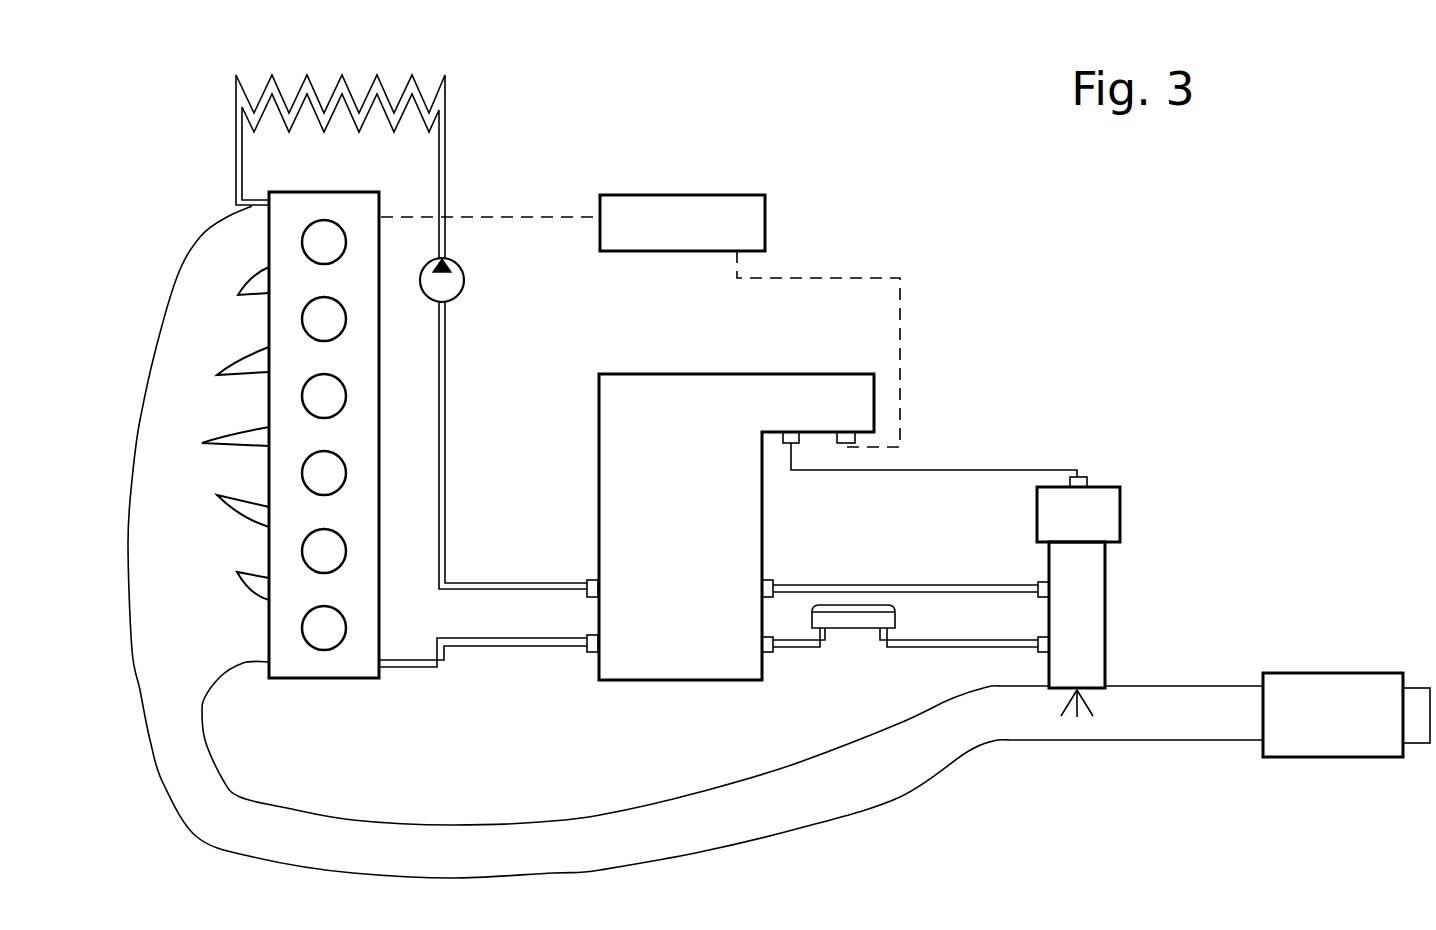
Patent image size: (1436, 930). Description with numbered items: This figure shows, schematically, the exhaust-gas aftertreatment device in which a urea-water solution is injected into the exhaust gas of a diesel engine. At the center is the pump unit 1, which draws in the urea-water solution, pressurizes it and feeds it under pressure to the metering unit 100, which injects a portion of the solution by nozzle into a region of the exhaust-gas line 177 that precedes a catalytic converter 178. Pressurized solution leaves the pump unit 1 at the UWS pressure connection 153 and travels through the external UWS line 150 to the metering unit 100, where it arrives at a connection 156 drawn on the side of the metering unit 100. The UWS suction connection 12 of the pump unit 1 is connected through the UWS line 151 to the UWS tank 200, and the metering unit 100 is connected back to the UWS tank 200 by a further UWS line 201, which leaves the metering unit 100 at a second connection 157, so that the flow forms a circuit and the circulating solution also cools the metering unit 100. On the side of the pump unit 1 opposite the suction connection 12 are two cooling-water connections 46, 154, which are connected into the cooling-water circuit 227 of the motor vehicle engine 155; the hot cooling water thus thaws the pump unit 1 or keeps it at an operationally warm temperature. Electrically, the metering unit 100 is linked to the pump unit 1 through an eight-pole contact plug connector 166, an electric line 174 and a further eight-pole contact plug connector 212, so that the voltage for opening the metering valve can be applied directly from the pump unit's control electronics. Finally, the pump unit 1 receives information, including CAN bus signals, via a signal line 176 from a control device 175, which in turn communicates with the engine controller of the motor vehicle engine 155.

The pump unit 1 is at (695, 529).
The UWS suction connection 12 is at (772, 653).
The cooling-water connection 46 is at (587, 650).
The metering unit 100 is at (1130, 598).
The external UWS line 150 is at (875, 585).
The UWS line 151 is at (805, 647).
The UWS pressure connection 153 is at (773, 582).
The cooling-water connection 154 is at (587, 582).
The motor vehicle engine 155 is at (320, 663).
The injector pressure connection 156 is at (1038, 585).
The injector return connection 157 is at (1038, 648).
The 8-pole contact plug connector 166 is at (1087, 481).
The electric line 174 is at (962, 470).
The control device 175 is at (660, 232).
The signal line 176 is at (846, 278).
The exhaust-gas line 177 is at (990, 720).
The catalytic converter 178 is at (1315, 726).
The UWS tank 200 is at (853, 630).
The further UWS line 201 is at (945, 640).
The 8-pole contact plug connector 212 is at (790, 440).
The cooling-water circuit 227 is at (445, 410).